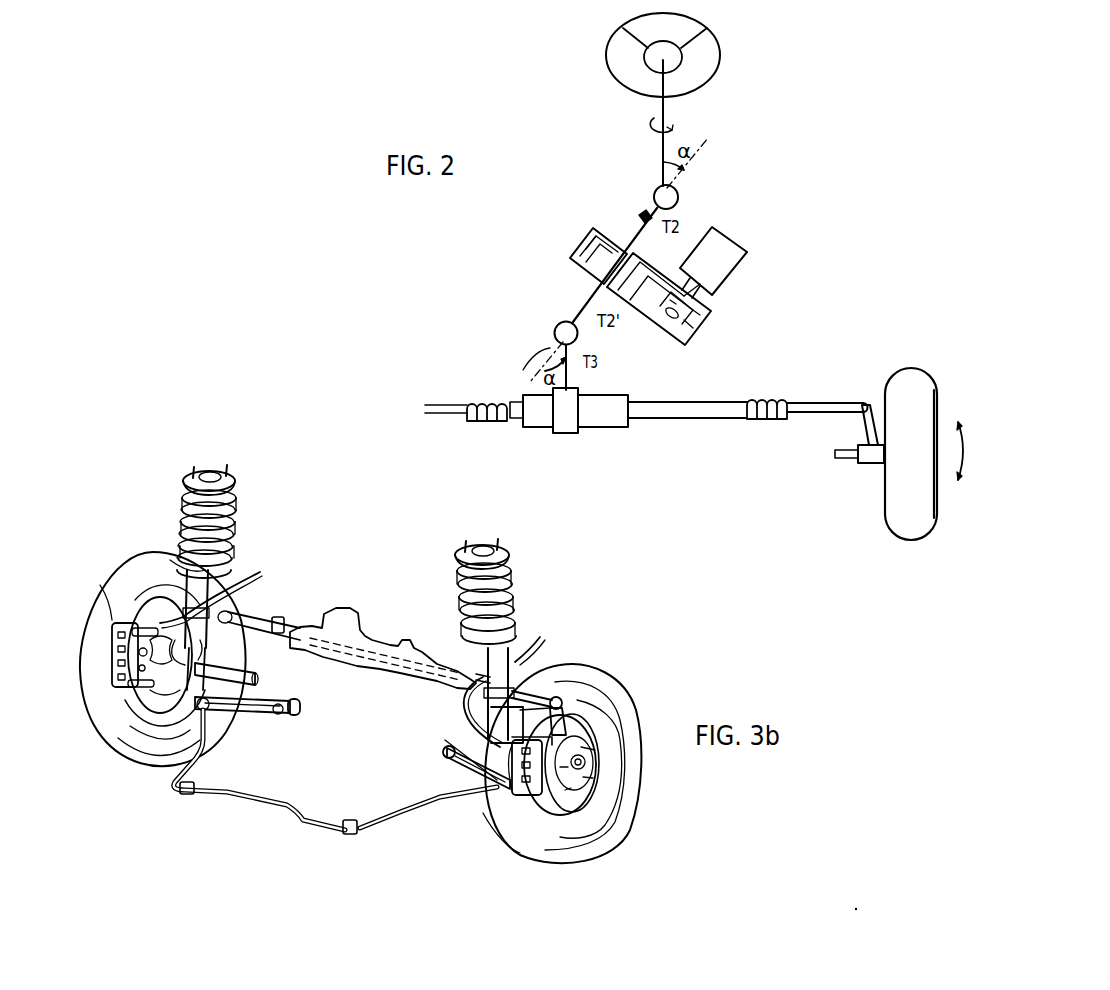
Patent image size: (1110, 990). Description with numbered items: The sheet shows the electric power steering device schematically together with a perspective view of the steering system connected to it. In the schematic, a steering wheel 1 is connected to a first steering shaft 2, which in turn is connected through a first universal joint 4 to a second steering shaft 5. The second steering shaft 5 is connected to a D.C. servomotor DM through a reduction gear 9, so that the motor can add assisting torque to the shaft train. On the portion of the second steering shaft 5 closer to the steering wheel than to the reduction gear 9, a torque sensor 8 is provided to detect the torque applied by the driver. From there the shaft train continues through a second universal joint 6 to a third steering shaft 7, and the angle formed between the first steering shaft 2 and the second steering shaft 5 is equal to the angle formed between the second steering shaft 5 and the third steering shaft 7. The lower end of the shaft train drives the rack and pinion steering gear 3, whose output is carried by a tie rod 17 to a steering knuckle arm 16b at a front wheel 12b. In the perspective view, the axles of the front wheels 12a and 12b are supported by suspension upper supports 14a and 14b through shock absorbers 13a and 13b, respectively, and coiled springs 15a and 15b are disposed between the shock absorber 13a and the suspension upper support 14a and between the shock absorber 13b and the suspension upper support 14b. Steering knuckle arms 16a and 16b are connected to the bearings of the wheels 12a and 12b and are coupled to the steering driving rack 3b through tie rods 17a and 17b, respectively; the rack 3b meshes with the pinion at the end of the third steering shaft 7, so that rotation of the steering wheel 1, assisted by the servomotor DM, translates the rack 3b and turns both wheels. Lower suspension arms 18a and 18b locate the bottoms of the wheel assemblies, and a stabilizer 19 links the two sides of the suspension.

In FIG. 2, the steering wheel 1 is at (716, 77).
In FIG. 2, the first steering shaft 2 is at (663, 150).
In FIG. 2, the steering gear rack 3 is at (577, 384).
In FIG. 2, the first universal joint 4 is at (681, 203).
In FIG. 2, the second steering shaft 5 is at (640, 234).
In FIG. 2, the universal joint 6 is at (555, 332).
In FIG. 2, the third steering shaft 7 is at (531, 368).
In FIG. 2, the torque sensor 8 is at (645, 213).
In FIG. 2, the reduction gear 9 is at (700, 334).
In FIG. 2, the D.C. servomotor DM is at (738, 242).
In FIG. 2, the tie rod 17 is at (818, 402).
In FIG. 2, the steering knuckle arm 16b is at (860, 427).
In FIG. 3b, the steering knuckle arm 16b is at (558, 700).
In FIG. 2, the front wheel 12b is at (910, 364).
In FIG. 3b, the front wheel 12b is at (623, 707).
In FIG. 3b, the front wheel 12a is at (140, 737).
In FIG. 3b, the shock absorber 13a is at (163, 578).
In FIG. 3b, the shock absorber 13b is at (523, 640).
In FIG. 3b, the suspension upper support 14a is at (222, 483).
In FIG. 3b, the suspension upper support 14b is at (510, 552).
In FIG. 3b, the coiled spring 15a is at (225, 530).
In FIG. 3b, the coiled spring 15b is at (515, 592).
In FIG. 3b, the steering knuckle arm 16a is at (233, 648).
In FIG. 3b, the tie rod 17a is at (253, 615).
In FIG. 3b, the tie rod 17b is at (558, 697).
In FIG. 3b, the lower suspension arm 18a is at (255, 714).
In FIG. 3b, the lower suspension arm 18b is at (463, 762).
In FIG. 3b, the stabilizer 19 is at (283, 795).
In FIG. 3b, the steering driving rack 3b is at (378, 667).